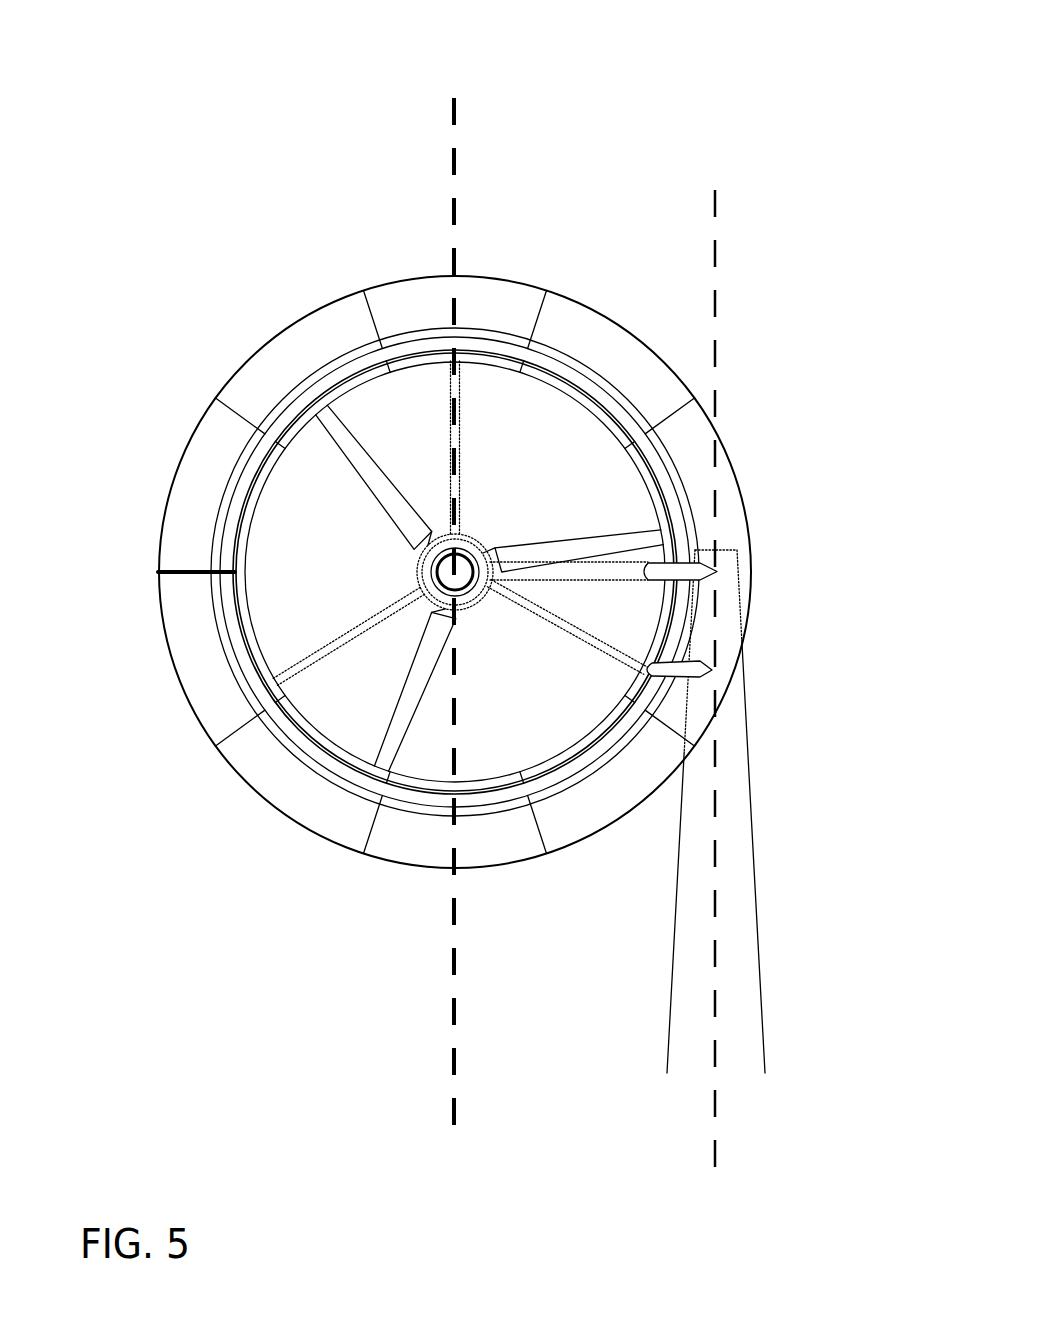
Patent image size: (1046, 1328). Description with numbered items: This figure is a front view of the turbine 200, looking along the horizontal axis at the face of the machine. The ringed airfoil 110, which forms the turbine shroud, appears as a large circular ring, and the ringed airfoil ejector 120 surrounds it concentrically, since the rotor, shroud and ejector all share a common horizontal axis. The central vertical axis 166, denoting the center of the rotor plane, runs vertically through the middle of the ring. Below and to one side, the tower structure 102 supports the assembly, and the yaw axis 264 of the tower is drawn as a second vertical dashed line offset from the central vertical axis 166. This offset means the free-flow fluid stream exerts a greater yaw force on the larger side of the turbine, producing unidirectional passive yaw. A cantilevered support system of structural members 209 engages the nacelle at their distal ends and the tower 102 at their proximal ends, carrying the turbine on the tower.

The turbine 200 is at (115, 45).
The central vertical axis 166 is at (452, 103).
The yaw axis 264 is at (715, 1152).
The tower structure 102 is at (732, 888).
The ringed airfoil ejector 120 is at (517, 297).
The ringed airfoil 110 is at (163, 788).
The structural members 209 is at (647, 575).